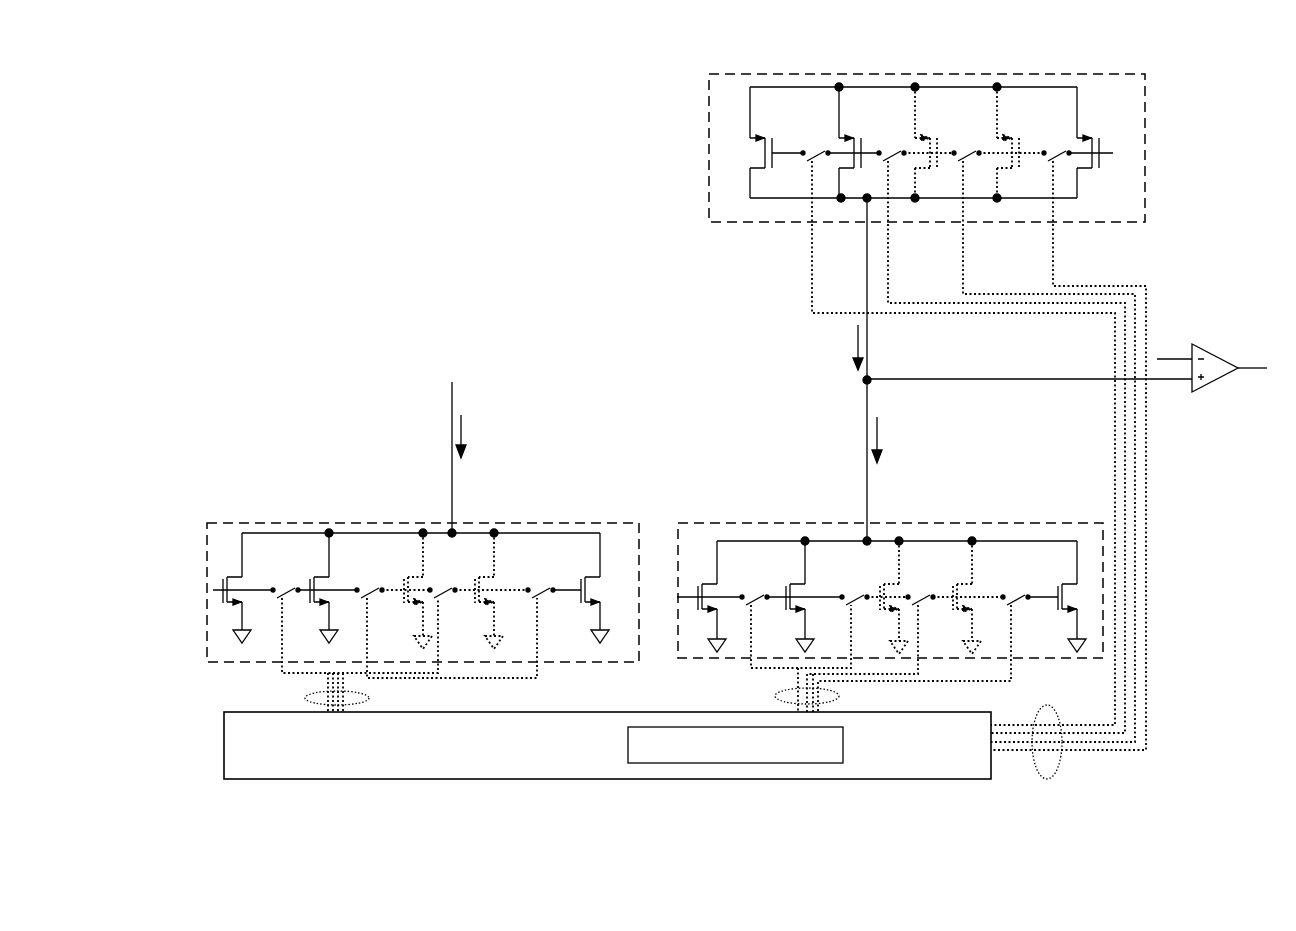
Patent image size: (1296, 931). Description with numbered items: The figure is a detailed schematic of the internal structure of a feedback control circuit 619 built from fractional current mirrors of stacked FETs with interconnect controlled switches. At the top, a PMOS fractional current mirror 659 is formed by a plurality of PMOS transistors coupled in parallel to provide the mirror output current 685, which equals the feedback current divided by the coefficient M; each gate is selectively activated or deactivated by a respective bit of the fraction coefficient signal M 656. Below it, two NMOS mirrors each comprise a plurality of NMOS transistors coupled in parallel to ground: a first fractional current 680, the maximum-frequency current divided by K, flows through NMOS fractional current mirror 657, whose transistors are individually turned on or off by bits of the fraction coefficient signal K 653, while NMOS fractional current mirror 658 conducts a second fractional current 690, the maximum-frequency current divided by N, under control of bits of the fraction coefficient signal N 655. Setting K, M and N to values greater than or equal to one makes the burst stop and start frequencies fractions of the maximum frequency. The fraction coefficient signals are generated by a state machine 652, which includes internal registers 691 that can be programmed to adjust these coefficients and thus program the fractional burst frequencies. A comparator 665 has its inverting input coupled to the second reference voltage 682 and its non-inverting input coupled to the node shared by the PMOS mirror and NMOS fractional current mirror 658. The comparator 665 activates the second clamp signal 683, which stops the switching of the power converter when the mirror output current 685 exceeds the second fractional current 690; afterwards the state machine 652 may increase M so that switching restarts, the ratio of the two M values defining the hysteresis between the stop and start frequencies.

The feedback control circuit 619 is at (1147, 48).
The PMOS fractional current mirror 659 is at (1163, 127).
The NMOS fractional current mirror 657 is at (517, 520).
The NMOS fractional current mirror 658 is at (1002, 513).
The current IFmax/K 680 is at (467, 430).
The current IFBllc/M 685 is at (842, 352).
The current IFmax/N 690 is at (890, 428).
The reference voltage VREF2 682 is at (1168, 323).
The comparator 665 is at (1227, 350).
The clamp_2 signal 683 is at (1250, 412).
The state machine 652 is at (375, 779).
The internal registers 691 is at (795, 764).
The fraction coefficient signal K 653 is at (300, 698).
The fraction coefficient signal N 655 is at (772, 698).
The fraction coefficient signal M 656 is at (1060, 770).